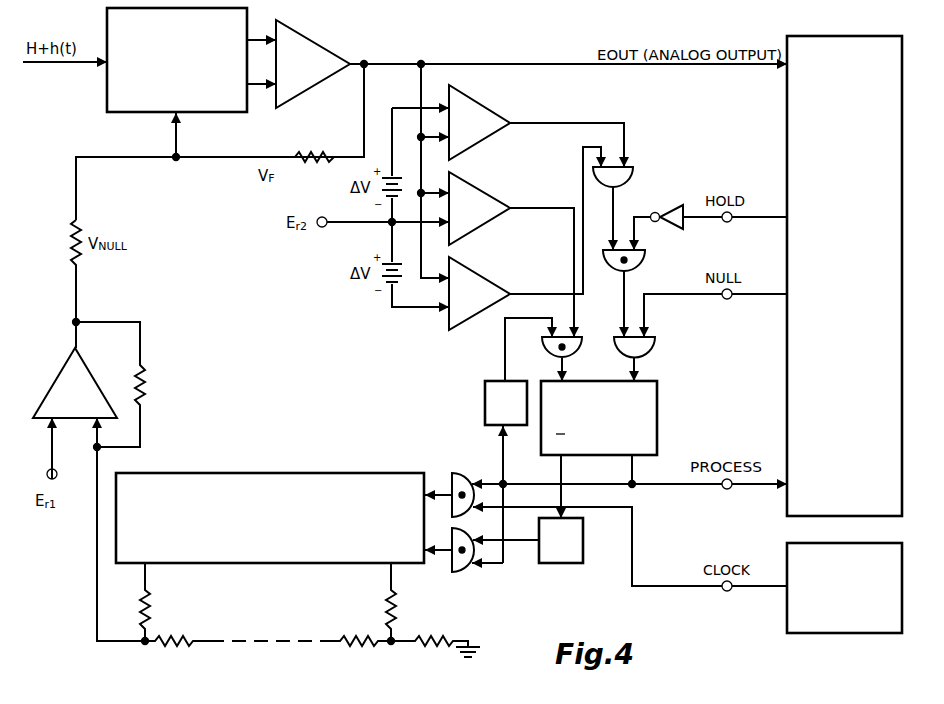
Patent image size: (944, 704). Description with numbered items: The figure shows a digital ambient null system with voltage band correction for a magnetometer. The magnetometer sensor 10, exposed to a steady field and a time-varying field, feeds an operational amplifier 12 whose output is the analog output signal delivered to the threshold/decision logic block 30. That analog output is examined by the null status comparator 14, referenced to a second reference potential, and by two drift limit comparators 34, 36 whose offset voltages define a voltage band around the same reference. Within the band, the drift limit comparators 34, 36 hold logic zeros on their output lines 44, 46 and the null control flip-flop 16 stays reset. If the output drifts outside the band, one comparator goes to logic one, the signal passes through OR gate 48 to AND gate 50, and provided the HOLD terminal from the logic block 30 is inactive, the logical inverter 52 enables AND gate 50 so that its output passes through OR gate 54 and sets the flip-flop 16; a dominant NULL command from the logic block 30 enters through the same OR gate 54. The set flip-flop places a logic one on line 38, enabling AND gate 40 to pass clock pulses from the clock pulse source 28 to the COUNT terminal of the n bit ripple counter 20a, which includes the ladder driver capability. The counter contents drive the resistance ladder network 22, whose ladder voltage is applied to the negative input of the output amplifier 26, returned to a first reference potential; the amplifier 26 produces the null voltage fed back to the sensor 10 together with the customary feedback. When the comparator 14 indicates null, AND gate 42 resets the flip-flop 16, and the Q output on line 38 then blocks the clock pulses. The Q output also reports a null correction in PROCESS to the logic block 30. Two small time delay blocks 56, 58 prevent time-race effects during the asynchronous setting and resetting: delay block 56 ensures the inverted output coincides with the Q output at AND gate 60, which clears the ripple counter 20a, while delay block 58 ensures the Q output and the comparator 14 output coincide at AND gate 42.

The magnetometer sensor 10 is at (108, 90).
The amplifier 12 is at (322, 46).
The comparator 14 is at (480, 197).
The flip-flop 16 is at (658, 418).
The ripple counter 20a is at (272, 473).
The resistance ladder network 22 is at (288, 616).
The operational amplifier 26 is at (62, 380).
The clock pulse source 28 is at (787, 606).
The threshold/decision logic block 30 is at (787, 113).
The drift limit comparator 34 is at (472, 283).
The drift limit comparator 36 is at (470, 114).
The line 38 is at (533, 484).
The AND gate 40 is at (458, 476).
The AND gate 42 is at (546, 352).
The line 44 is at (536, 294).
The line 46 is at (563, 123).
The OR gate 48 is at (630, 181).
The AND gate 50 is at (640, 263).
The logical inverter 52 is at (677, 228).
The OR gate 54 is at (651, 352).
The time delay function block 56 is at (561, 563).
The time delay function block 58 is at (487, 402).
The AND gate 60 is at (460, 573).